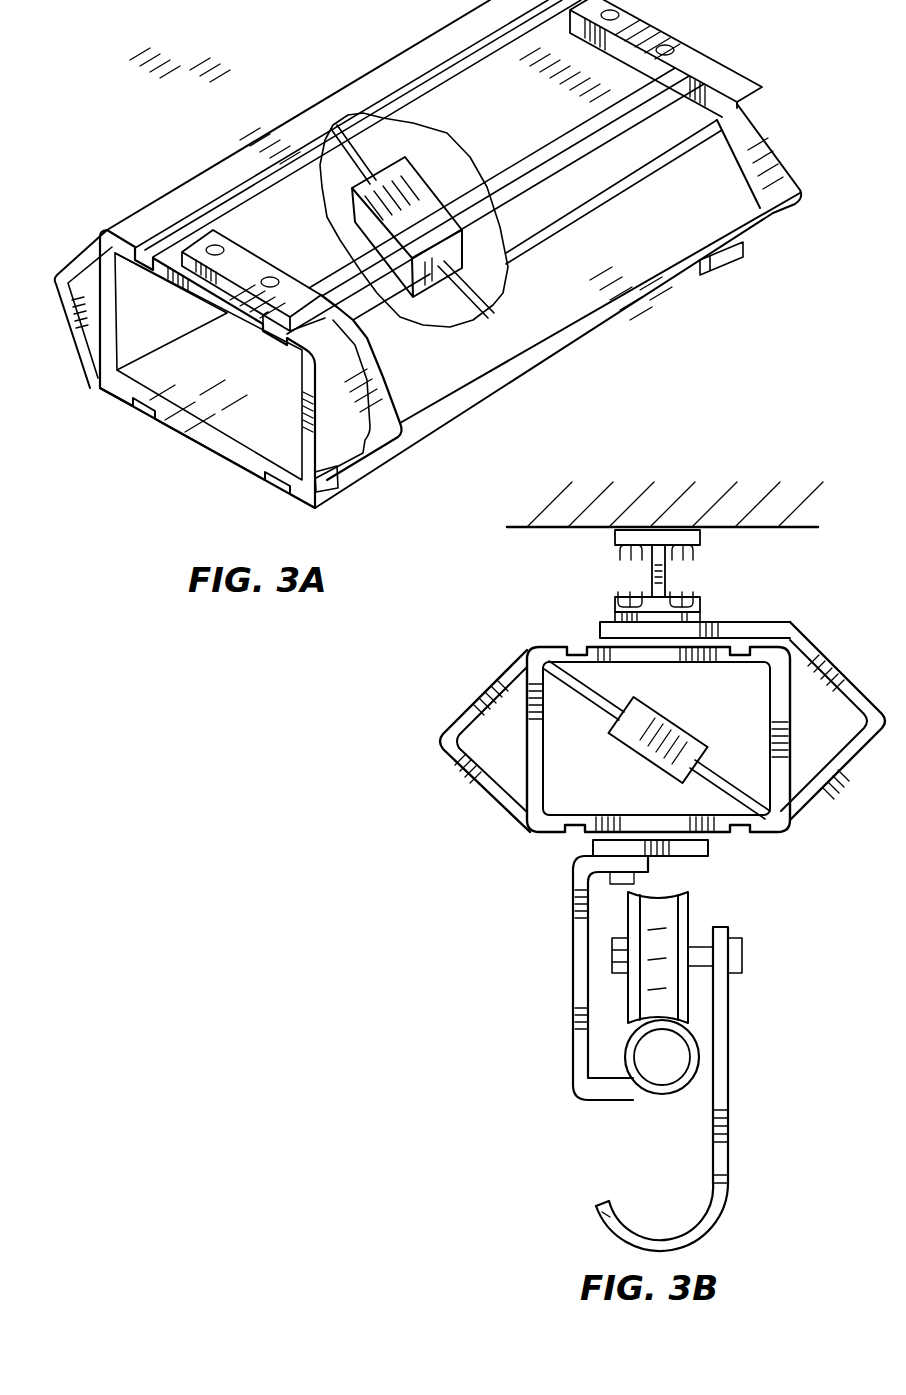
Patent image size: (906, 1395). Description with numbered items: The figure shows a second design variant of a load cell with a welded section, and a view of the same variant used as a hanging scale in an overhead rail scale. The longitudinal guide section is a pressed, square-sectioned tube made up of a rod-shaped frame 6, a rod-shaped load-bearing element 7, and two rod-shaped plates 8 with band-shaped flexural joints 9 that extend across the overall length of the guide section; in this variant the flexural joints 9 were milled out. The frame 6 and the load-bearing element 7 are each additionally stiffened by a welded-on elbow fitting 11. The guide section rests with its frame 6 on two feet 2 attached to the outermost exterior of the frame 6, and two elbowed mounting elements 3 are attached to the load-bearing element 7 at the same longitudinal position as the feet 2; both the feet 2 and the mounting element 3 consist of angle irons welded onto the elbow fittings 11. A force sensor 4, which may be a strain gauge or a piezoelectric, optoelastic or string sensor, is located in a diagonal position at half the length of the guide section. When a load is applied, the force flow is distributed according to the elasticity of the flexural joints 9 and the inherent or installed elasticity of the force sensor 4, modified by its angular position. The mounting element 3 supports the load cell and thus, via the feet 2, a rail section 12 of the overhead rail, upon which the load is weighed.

In FIG. 3A, the feet 2 is at (330, 487).
In FIG. 3B, the feet 2 is at (633, 850).
In FIG. 3A, the mounting element 3 is at (233, 247).
In FIG. 3B, the mounting element 3 is at (683, 632).
In FIG. 3A, the force sensor 4 is at (407, 173).
In FIG. 3B, the force sensor 4 is at (653, 737).
In FIG. 3A, the frame 6 is at (118, 290).
In FIG. 3B, the frame 6 is at (537, 743).
In FIG. 3A, the load-bearing element 7 is at (303, 442).
In FIG. 3B, the load-bearing element 7 is at (783, 707).
In FIG. 3A, the plate 8 is at (227, 313).
In FIG. 3B, the plate 8 is at (665, 823).
In FIG. 3A, the flexural joints 9 is at (150, 243).
In FIG. 3B, the flexural joints 9 is at (577, 647).
In FIG. 3A, the elbow fitting 11 is at (73, 263).
In FIG. 3B, the elbow fitting 11 is at (470, 703).
In FIG. 3B, the rail section 12 is at (625, 1052).